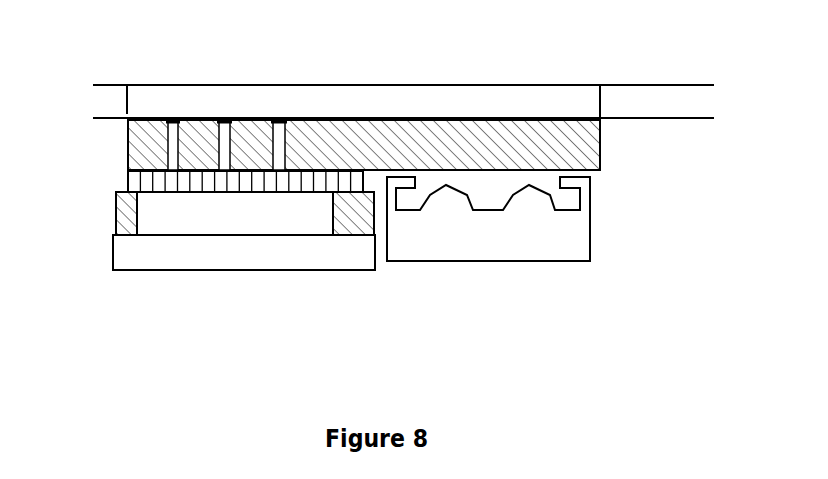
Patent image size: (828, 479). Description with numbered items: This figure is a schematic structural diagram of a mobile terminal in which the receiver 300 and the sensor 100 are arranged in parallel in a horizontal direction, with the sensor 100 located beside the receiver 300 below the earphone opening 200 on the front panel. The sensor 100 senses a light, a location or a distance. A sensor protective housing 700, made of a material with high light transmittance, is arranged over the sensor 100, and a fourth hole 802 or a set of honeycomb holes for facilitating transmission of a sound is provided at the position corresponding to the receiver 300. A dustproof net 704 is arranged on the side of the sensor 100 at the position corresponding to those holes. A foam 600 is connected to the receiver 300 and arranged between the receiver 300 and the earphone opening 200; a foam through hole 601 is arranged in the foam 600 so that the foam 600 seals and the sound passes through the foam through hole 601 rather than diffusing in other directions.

The earphone opening 200 is at (470, 85).
The sensor protective housing 700 is at (600, 145).
The fourth hole 802 is at (223, 120).
The dustproof net 704 is at (127, 182).
The foam 600 is at (115, 207).
The foam through hole 601 is at (212, 210).
The receiver 300 is at (243, 270).
The sensor 100 is at (590, 235).